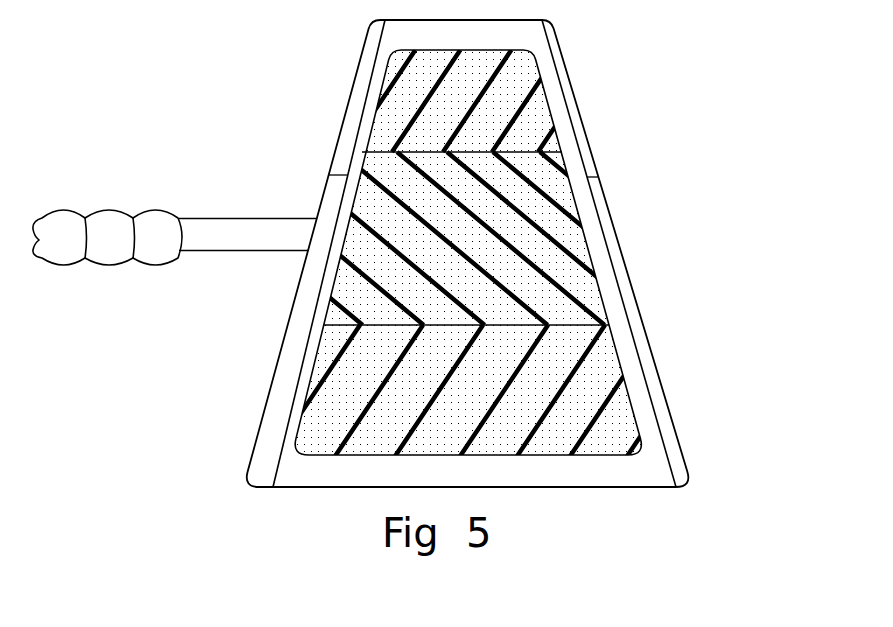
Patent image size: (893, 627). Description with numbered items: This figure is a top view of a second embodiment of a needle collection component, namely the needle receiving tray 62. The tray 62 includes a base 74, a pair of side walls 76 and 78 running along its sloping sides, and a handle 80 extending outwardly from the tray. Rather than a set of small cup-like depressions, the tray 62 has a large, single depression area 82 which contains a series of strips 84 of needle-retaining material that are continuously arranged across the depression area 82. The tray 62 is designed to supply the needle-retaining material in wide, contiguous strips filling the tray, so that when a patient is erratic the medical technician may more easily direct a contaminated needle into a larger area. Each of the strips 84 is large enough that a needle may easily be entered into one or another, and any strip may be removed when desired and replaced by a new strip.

The needle receiving tray 62 is at (641, 223).
The base 74 is at (340, 515).
The side wall 76 is at (240, 449).
The side wall 78 is at (670, 363).
The handle 80 is at (108, 282).
The depression area 82 is at (557, 483).
The strips of needle-retaining material 84 is at (554, 89).